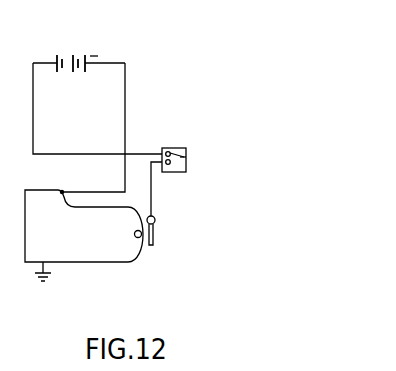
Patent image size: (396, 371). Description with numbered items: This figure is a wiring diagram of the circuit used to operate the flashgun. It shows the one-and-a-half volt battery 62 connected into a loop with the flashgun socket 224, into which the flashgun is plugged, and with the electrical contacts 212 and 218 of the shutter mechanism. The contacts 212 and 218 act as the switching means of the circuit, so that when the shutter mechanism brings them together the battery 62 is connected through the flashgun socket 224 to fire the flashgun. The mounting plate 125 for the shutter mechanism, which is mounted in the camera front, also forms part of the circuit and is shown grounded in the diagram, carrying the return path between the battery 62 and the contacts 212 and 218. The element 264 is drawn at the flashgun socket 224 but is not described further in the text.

The battery 62 is at (86, 56).
The flashgun socket 224 is at (178, 148).
The switch blade 264 is at (186, 157).
The mounting plate 125 is at (85, 247).
The electrical contact 212 is at (156, 234).
The electrical contact 218 is at (135, 236).